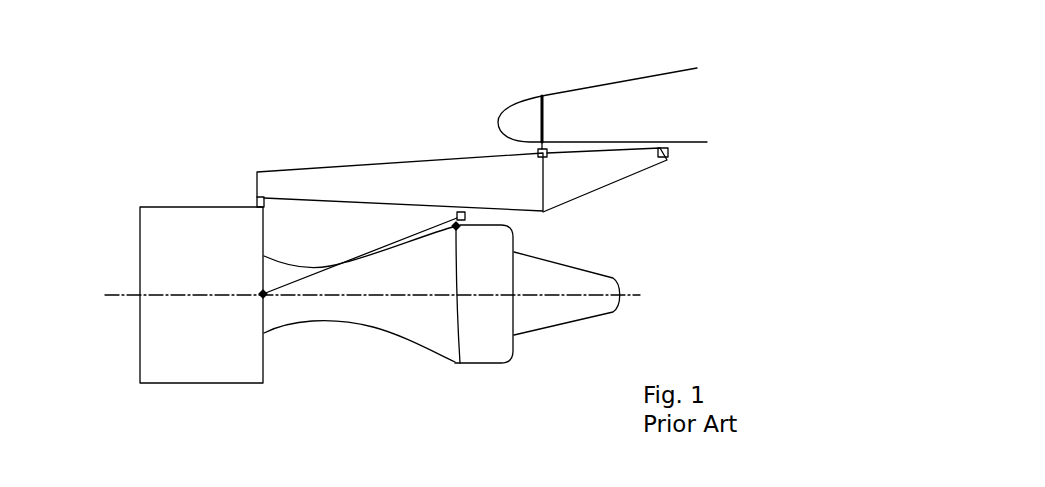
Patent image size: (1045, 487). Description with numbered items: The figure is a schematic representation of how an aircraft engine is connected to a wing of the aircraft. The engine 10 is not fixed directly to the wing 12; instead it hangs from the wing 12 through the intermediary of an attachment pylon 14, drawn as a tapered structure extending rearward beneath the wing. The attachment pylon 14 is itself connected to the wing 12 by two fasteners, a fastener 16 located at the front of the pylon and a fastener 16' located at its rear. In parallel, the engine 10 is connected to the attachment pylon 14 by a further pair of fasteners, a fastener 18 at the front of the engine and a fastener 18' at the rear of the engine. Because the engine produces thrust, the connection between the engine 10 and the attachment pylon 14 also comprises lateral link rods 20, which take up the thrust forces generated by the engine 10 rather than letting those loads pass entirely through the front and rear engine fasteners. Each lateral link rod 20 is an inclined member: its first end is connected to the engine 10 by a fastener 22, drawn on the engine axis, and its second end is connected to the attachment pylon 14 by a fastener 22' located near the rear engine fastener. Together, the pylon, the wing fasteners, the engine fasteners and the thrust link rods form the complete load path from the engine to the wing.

The engine 10 is at (119, 265).
The wing 12 is at (643, 86).
The attachment pylon 14 is at (359, 176).
The fastener 16 is at (457, 126).
The fastener 16' is at (745, 172).
The fastener 18 is at (209, 165).
The fastener 18' is at (553, 228).
The lateral link rod 20 is at (370, 252).
The fastener 22 is at (358, 331).
The fastener 22' is at (471, 323).